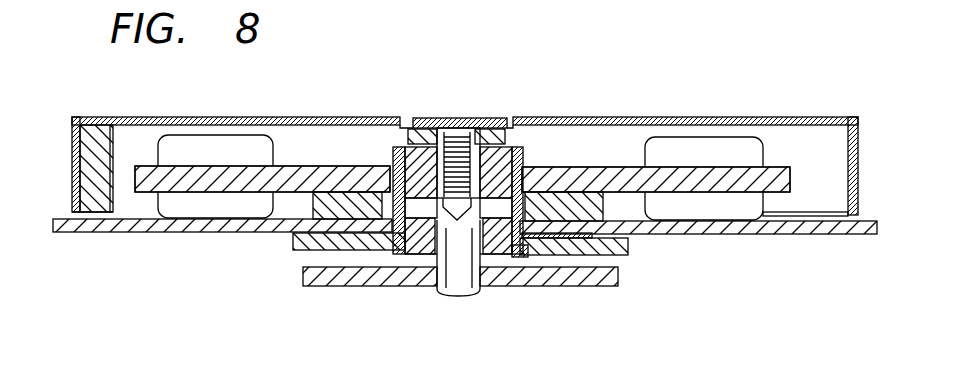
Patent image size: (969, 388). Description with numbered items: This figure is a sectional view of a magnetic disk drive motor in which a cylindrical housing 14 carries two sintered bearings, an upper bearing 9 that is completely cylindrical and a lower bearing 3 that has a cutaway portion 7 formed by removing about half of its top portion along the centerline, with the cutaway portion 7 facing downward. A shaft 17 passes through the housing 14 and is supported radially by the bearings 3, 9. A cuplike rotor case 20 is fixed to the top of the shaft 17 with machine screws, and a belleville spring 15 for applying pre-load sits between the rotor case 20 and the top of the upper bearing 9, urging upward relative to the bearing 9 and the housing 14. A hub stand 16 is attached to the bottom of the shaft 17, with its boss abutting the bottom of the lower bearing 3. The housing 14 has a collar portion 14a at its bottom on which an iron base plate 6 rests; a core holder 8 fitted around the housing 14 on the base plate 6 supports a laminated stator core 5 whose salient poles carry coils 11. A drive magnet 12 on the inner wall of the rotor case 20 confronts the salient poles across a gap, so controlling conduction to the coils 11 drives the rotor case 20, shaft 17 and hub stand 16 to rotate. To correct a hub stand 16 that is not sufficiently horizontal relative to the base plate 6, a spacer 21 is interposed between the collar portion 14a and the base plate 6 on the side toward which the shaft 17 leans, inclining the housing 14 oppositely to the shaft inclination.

The lower bearing 3 is at (412, 252).
The stator core 5 is at (218, 190).
The base plate 6 is at (93, 233).
The cutaway portion 7 is at (514, 260).
The core holder 8 is at (333, 195).
The upper bearing 9 is at (512, 128).
The coil 11 is at (185, 212).
The drive magnet 12 is at (87, 182).
The housing 14 is at (397, 134).
The collar portion 14a is at (300, 250).
The belleville spring 15 is at (375, 118).
The hub stand 16 is at (330, 284).
The shaft 17 is at (455, 294).
The rotor case 20 is at (142, 117).
The spacer 21 is at (580, 240).